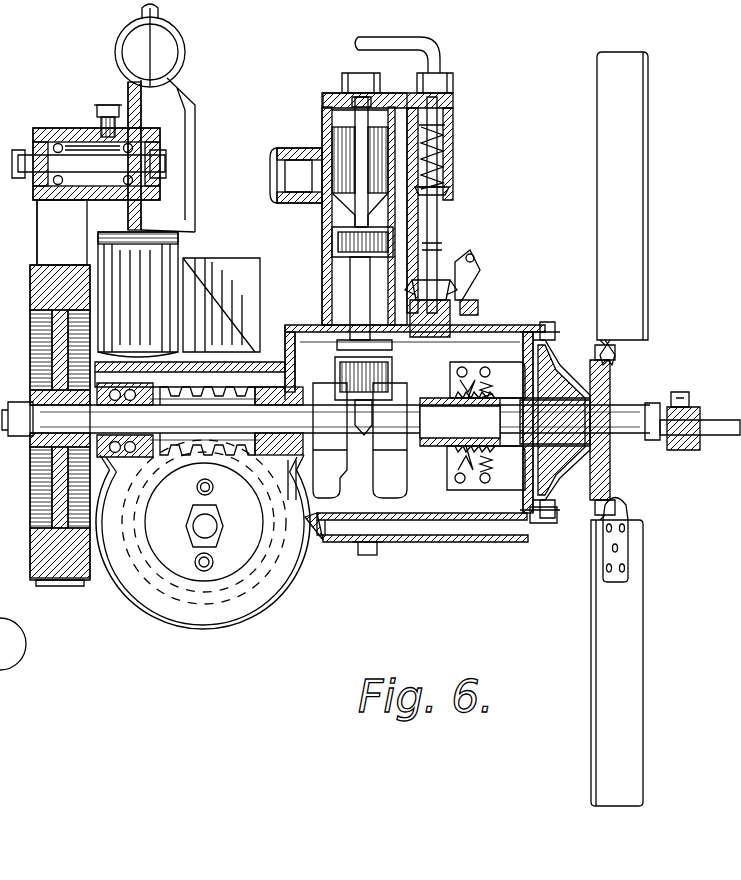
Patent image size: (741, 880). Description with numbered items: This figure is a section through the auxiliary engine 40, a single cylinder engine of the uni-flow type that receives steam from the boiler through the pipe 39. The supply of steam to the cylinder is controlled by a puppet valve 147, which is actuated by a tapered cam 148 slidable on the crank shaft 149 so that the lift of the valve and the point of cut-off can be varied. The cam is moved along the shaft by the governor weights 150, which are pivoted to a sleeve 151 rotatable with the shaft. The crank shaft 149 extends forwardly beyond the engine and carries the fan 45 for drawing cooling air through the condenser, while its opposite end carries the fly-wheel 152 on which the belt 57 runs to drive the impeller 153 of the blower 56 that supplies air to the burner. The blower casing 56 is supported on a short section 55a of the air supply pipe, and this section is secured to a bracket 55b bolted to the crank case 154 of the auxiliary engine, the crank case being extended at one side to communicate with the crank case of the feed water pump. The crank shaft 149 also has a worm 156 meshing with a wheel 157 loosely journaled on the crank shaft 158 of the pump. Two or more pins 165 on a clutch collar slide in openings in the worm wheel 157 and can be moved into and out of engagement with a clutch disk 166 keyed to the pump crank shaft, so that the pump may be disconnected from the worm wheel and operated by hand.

The pipe 39 is at (408, 43).
The auxiliary engine 40 is at (322, 130).
The fan 45 is at (603, 587).
The short section of the air supply pipe 55a is at (175, 258).
The bracket 55b is at (213, 300).
The blower 56 is at (185, 48).
The belt 57 is at (45, 228).
The puppet valve 147 is at (446, 162).
The tapered cam 148 is at (443, 447).
The crank shaft 149 is at (310, 540).
The governor weights 150 is at (505, 345).
The sleeve 151 is at (597, 470).
The fly-wheel 152 is at (70, 584).
The impeller 153 is at (150, 147).
The crank case 154 is at (450, 510).
The worm 156 is at (245, 385).
The wheel 157 is at (149, 576).
The crank shaft of the pump 158 is at (192, 545).
The pins 165 is at (213, 565).
The clutch disk 166 is at (218, 567).